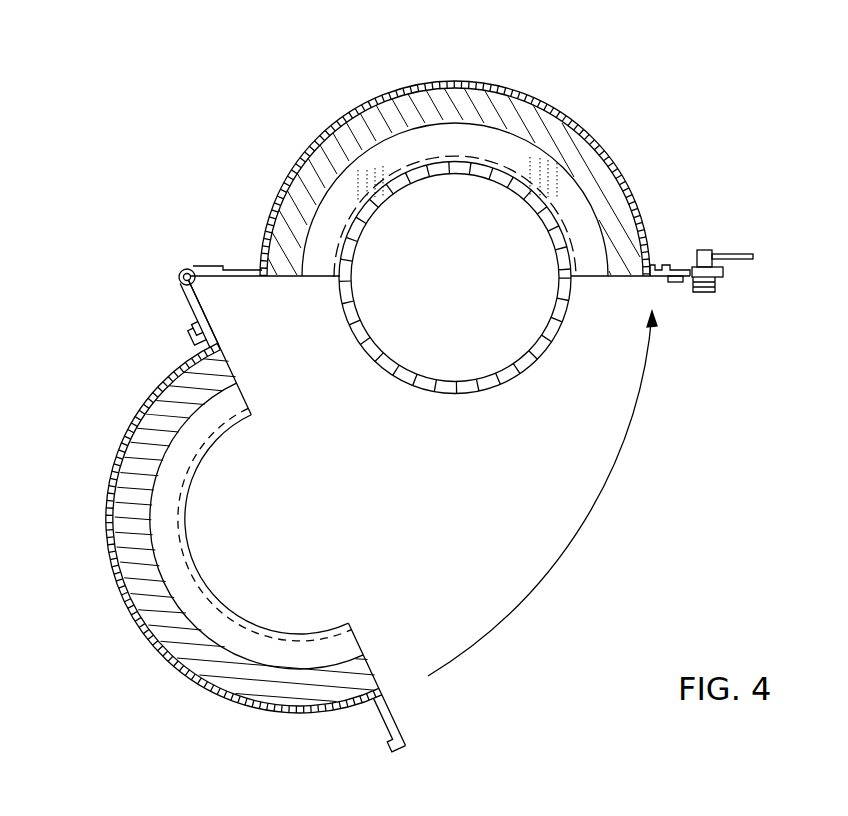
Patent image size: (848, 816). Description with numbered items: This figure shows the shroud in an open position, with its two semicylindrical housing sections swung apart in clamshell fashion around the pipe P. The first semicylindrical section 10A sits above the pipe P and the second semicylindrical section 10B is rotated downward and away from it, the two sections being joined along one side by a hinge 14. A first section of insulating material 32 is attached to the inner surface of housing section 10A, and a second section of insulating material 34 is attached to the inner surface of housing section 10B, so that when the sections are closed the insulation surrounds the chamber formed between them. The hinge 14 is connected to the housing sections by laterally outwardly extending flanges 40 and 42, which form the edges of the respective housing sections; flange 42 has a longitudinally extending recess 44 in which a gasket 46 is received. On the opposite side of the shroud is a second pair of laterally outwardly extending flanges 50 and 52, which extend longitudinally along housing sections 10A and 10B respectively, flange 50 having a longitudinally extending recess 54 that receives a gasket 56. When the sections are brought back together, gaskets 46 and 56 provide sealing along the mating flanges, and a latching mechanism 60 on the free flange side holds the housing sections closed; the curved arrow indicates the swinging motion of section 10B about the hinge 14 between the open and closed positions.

The first semicylindrical section 10A is at (542, 102).
The second semicylindrical section 10B is at (171, 652).
The first section of insulating material 32 is at (473, 101).
The second section of insulating material 34 is at (133, 545).
The hinge 14 is at (184, 269).
The flange 40 is at (242, 269).
The flange 42 is at (183, 297).
The recess 44 is at (199, 328).
The gasket 46 is at (212, 325).
The flange 50 is at (656, 268).
The flange 52 is at (390, 722).
The recess 54 is at (676, 268).
The gasket 56 is at (679, 283).
The latching mechanism 60 is at (765, 285).
The pipe P is at (512, 393).